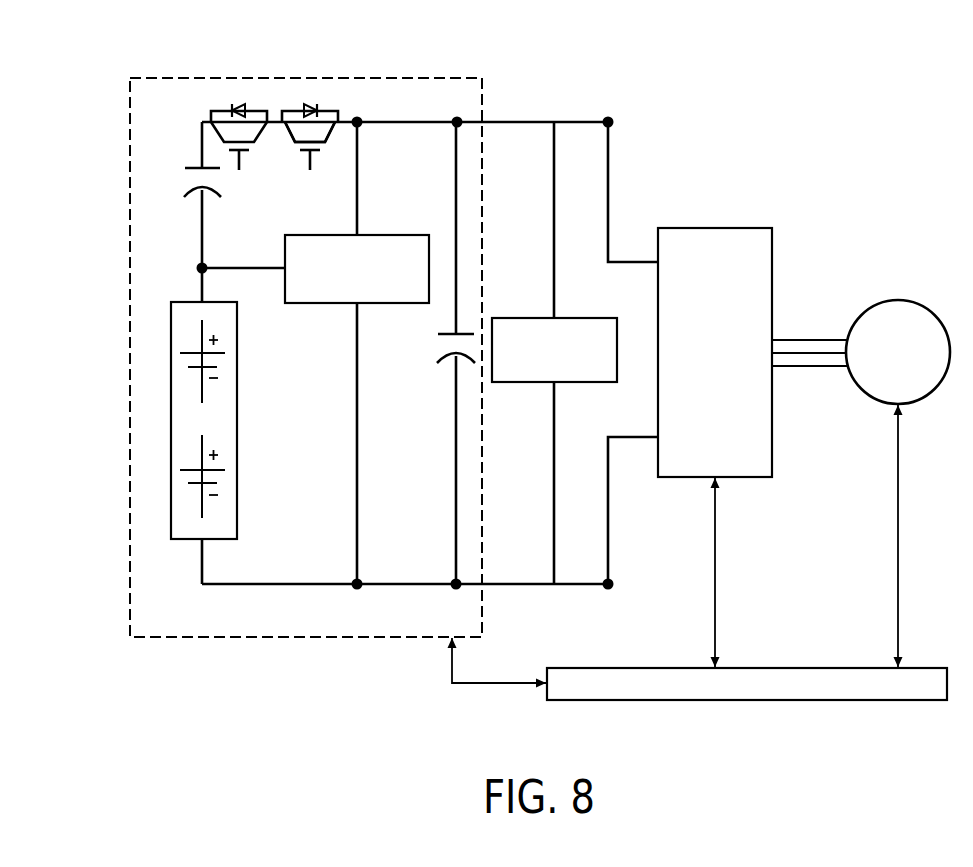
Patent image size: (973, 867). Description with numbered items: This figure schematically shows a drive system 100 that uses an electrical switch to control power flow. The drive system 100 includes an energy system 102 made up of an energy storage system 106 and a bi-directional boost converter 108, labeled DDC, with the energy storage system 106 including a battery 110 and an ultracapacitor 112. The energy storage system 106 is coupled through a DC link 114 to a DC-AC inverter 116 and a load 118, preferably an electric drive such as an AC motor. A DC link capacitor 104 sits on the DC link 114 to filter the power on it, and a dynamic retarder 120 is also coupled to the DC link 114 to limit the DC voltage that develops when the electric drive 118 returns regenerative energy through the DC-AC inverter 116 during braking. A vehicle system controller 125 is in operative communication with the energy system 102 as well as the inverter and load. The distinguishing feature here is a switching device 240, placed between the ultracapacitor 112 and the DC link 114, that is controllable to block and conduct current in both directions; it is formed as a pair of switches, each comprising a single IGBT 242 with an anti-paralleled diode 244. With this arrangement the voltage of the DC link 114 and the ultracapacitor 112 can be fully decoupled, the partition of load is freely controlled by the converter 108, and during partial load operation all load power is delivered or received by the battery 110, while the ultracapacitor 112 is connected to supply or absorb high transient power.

The drive system 100 is at (587, 72).
The energy system 102 is at (198, 93).
The DC link capacitor 104 is at (443, 380).
The energy storage system 106 is at (208, 431).
The bi-directional boost converter 108 is at (373, 235).
The battery 110 is at (238, 380).
The ultracapacitor 112 is at (178, 178).
The DC link 114 is at (505, 122).
The DC-AC inverter 116 is at (772, 442).
The load 118 is at (858, 313).
The dynamic retarder 120 is at (617, 347).
The vehicle system controller 125 is at (745, 700).
The switching device 240 is at (343, 104).
The IGBT 242 is at (332, 148).
The anti-paralleled diode 244 is at (235, 106).